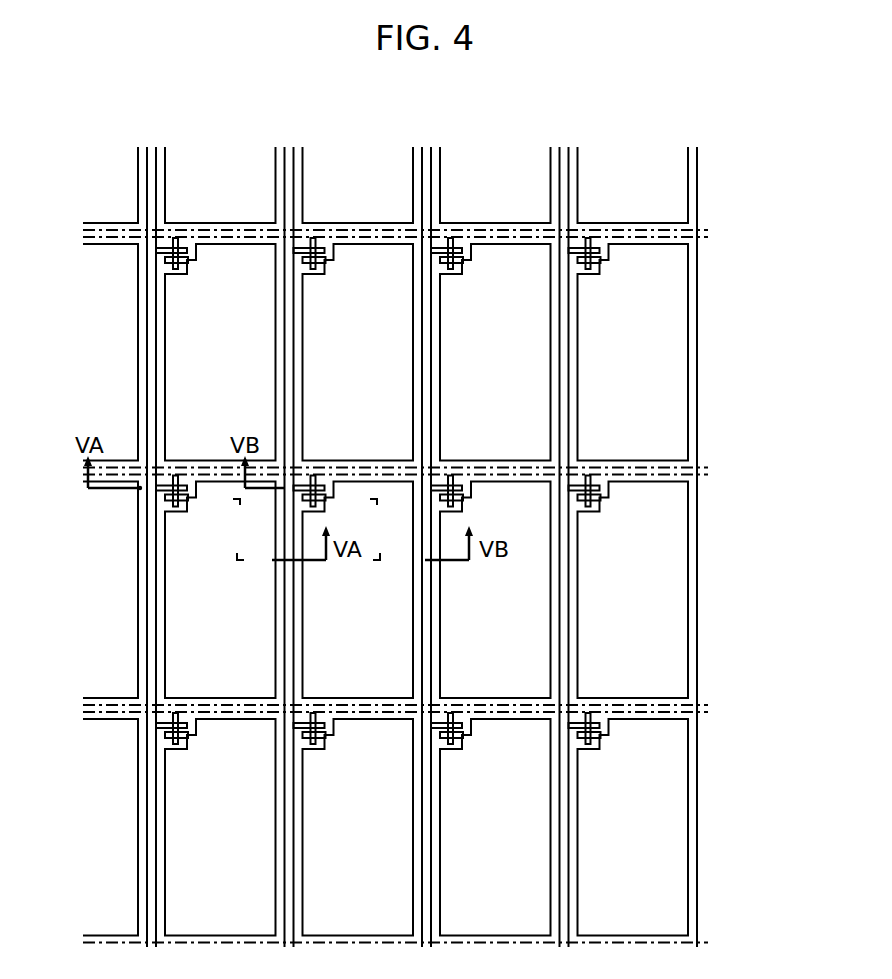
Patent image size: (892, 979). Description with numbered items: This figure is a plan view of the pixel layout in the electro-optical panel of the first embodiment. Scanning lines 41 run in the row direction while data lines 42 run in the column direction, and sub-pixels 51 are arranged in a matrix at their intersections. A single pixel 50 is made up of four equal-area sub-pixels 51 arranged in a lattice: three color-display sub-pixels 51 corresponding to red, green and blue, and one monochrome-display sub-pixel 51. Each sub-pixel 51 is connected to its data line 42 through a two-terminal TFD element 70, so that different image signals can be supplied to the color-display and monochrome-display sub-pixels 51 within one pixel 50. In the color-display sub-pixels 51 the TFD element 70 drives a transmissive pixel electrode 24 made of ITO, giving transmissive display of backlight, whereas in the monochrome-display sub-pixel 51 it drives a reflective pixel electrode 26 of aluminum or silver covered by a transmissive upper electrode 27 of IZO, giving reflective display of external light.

The transmissive pixel electrode 24 is at (303, 387).
The reflective pixel electrode 26 is at (367, 586).
The transmissive upper electrode 27 is at (297, 687).
The scanning line 41 is at (66, 946).
The data line 42 is at (151, 145).
The pixel 50 is at (828, 462).
The sub-pixel 51 is at (402, 427).
The TFD element 70 is at (158, 237).